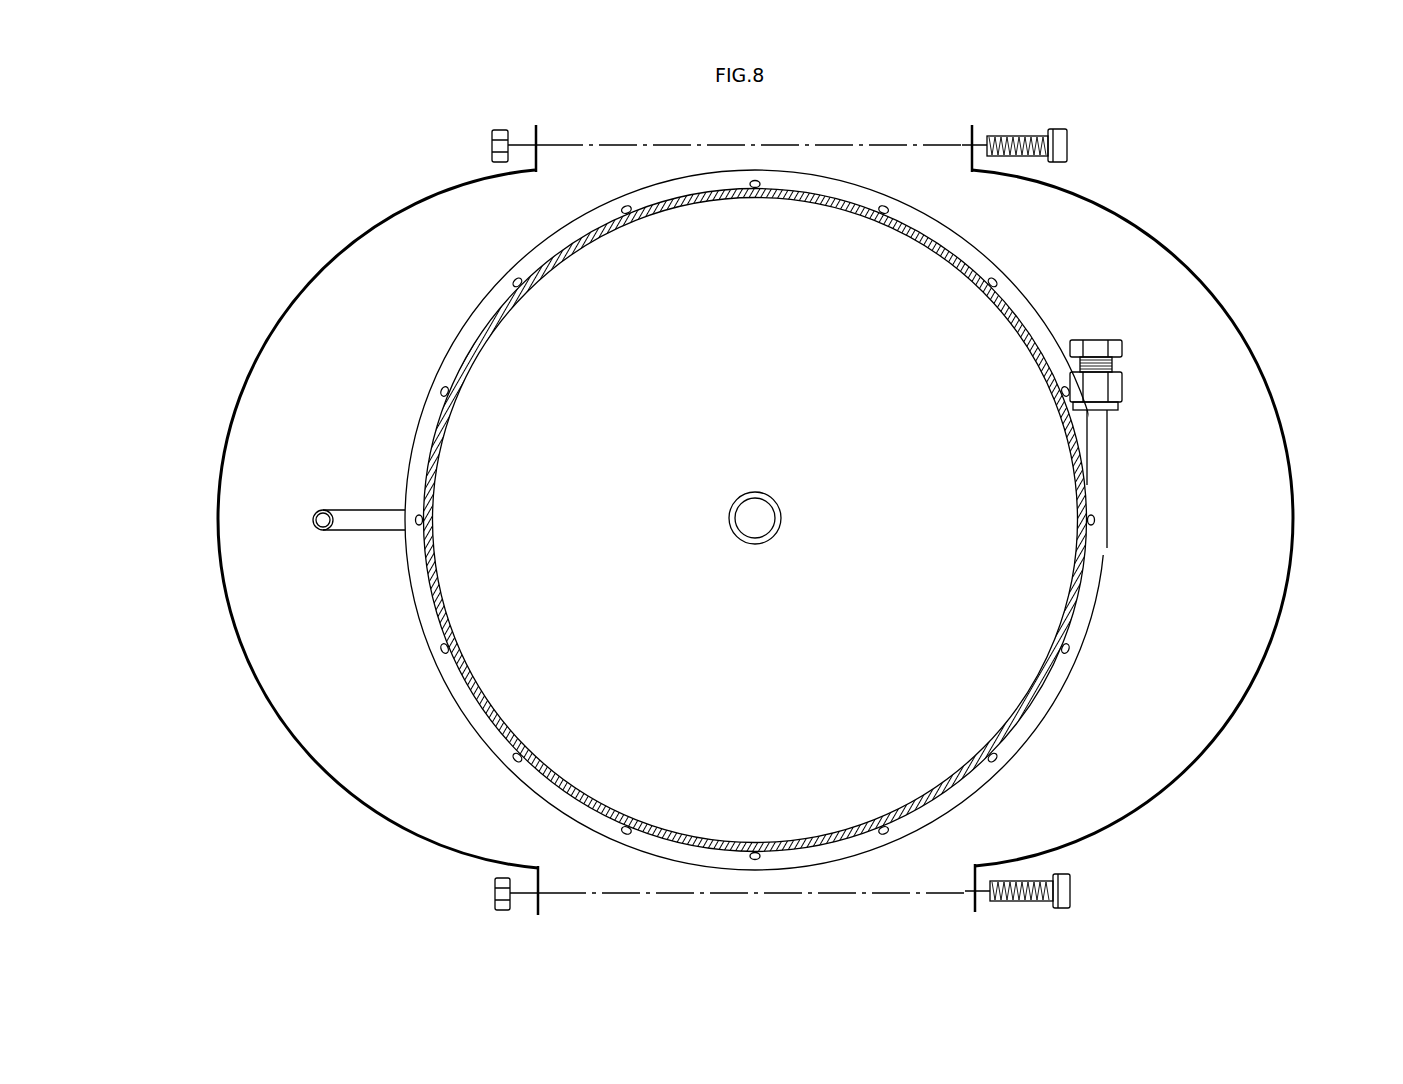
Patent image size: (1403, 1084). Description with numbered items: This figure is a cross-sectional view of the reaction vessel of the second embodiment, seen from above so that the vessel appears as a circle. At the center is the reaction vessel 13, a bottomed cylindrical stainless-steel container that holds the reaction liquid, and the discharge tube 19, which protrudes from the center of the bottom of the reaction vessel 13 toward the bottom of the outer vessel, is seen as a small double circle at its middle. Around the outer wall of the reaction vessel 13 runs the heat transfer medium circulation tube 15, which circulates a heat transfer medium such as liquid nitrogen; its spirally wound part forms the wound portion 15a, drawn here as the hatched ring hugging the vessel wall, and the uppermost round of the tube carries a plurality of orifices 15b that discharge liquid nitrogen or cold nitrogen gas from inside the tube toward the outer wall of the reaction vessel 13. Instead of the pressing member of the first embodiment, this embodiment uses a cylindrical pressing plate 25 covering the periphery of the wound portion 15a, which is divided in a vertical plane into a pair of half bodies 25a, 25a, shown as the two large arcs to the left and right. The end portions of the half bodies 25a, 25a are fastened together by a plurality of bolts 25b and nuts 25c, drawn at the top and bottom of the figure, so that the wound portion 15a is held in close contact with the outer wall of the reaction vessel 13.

The reaction vessel 13 is at (440, 405).
The heat transfer medium circulation tube 15 is at (738, 520).
The wound portion 15a is at (453, 345).
The orifices 15b is at (628, 215).
The discharge tube 19 is at (755, 545).
The cylindrical pressing plate 25 is at (753, 519).
The half body 25a is at (222, 462).
The bolt 25b is at (1067, 142).
The nut 25c is at (492, 137).